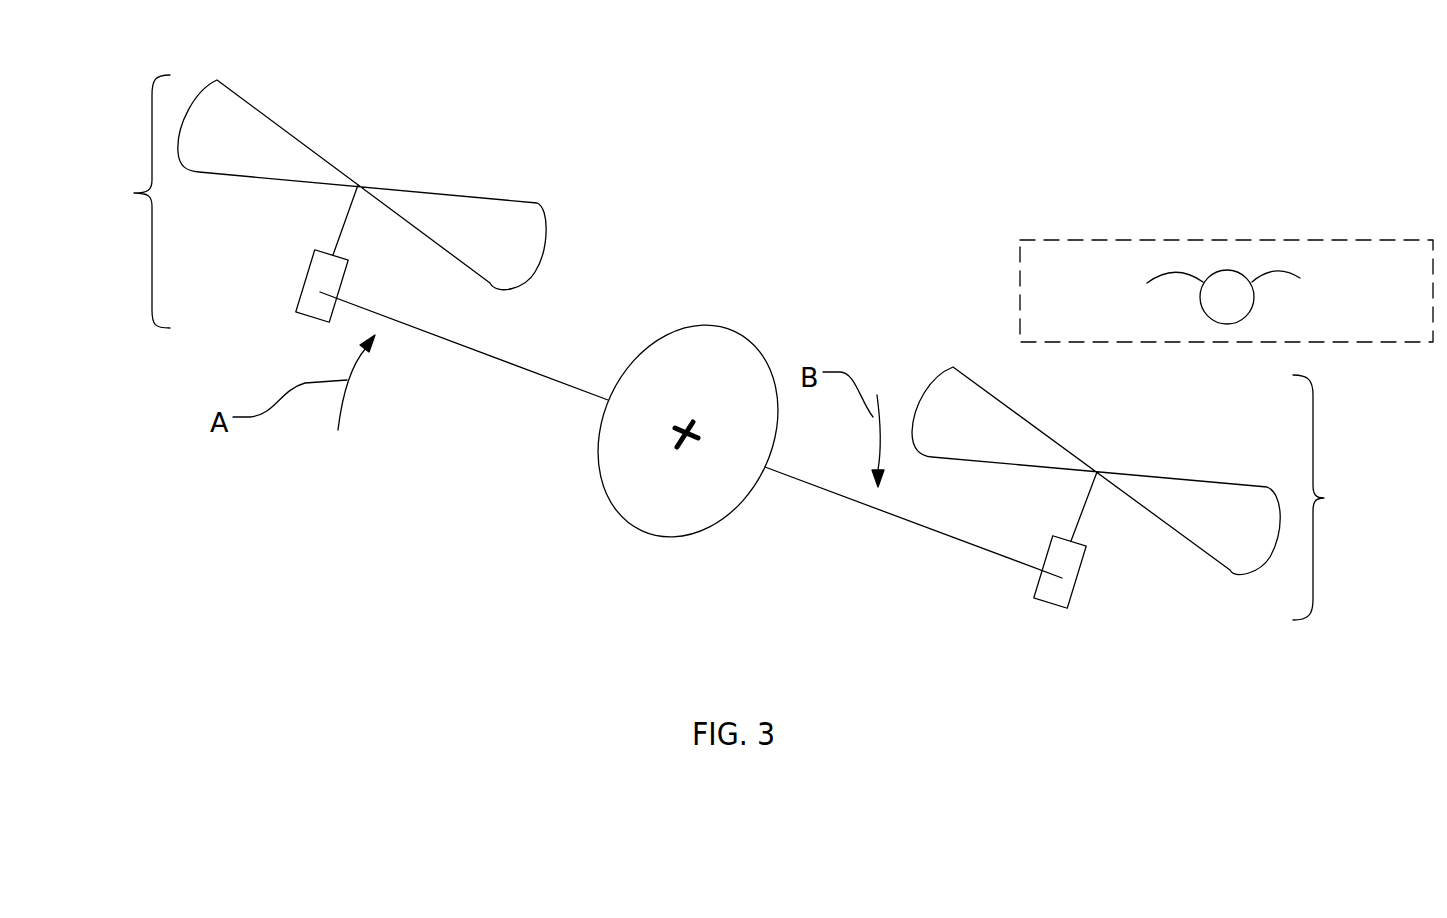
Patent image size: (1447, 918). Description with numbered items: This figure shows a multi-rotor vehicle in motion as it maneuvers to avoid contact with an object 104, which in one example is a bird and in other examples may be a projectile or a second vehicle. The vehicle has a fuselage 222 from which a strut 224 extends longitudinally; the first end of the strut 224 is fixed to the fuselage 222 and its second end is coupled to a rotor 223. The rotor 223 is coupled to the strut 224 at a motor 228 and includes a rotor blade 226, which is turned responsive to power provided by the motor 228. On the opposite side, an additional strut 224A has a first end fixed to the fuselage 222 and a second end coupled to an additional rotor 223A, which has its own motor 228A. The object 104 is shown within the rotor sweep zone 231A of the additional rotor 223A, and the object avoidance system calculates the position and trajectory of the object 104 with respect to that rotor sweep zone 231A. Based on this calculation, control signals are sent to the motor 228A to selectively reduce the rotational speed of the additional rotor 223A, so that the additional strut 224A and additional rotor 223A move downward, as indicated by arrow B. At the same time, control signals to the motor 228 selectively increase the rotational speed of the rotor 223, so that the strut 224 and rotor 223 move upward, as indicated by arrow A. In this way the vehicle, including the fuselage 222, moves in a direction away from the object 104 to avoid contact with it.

The rotor 223 is at (342, 219).
The rotor blade 226 is at (477, 193).
The motor 228 is at (307, 313).
The strut 224 is at (487, 358).
The fuselage 222 is at (667, 537).
The additional strut 224A is at (813, 483).
The additional rotor 223A is at (1154, 513).
The motor 228A is at (1077, 582).
The rotor sweep zone 231A is at (1040, 240).
The object 104 is at (1278, 273).